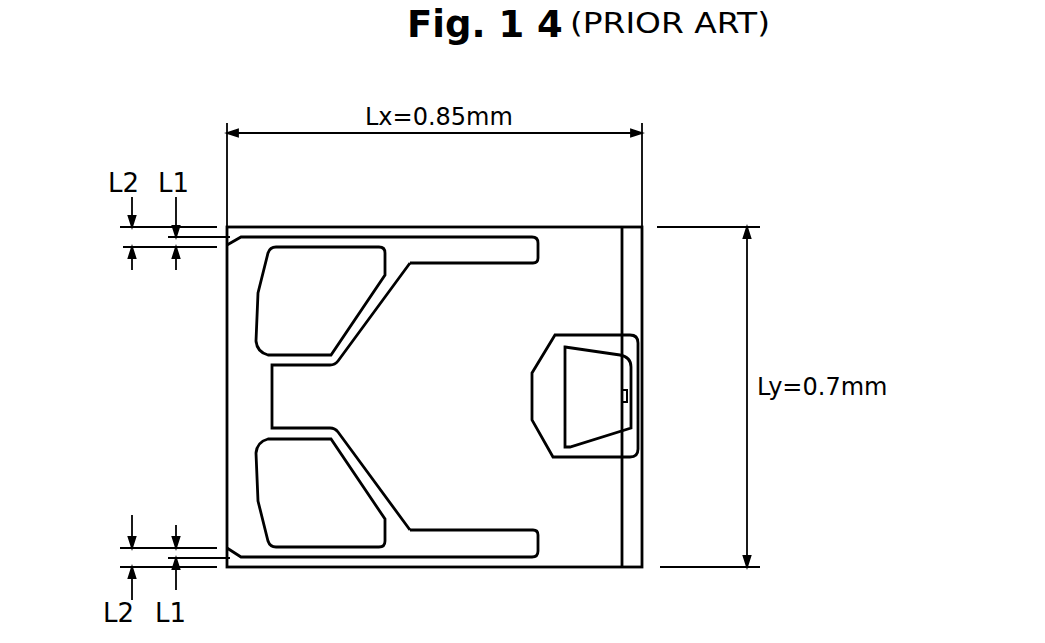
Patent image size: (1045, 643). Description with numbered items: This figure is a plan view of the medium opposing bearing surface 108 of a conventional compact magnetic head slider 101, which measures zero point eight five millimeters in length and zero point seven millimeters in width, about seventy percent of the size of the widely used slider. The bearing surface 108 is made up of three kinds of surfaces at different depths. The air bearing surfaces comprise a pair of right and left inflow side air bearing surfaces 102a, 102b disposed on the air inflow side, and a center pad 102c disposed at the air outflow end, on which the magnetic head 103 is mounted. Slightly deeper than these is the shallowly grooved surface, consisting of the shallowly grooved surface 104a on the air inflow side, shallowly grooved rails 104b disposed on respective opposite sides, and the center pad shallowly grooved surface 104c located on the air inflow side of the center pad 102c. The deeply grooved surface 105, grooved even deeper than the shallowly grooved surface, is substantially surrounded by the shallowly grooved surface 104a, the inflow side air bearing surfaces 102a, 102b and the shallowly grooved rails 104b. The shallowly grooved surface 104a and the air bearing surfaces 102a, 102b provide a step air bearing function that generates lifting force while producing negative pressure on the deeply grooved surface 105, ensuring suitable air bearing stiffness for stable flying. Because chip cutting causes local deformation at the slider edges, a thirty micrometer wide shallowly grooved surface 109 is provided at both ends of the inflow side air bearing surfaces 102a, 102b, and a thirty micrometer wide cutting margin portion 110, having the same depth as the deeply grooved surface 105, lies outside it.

The slider 101 is at (227, 377).
The inflow side air bearing surface 102a is at (297, 317).
The inflow side air bearing surface 102b is at (297, 488).
The center pad 102c is at (597, 378).
The magnetic head 103 is at (627, 400).
The shallowly grooved surface on the air inflow side 104a is at (243, 430).
The shallowly grooved rail 104b is at (462, 254).
The center pad shallowly grooved surface 104c is at (553, 377).
The deeply grooved surface 105 is at (483, 357).
The bearing surface 108 is at (327, 550).
The shallowly grooved surface 109 is at (300, 244).
The cutting margin portion 110 is at (383, 235).